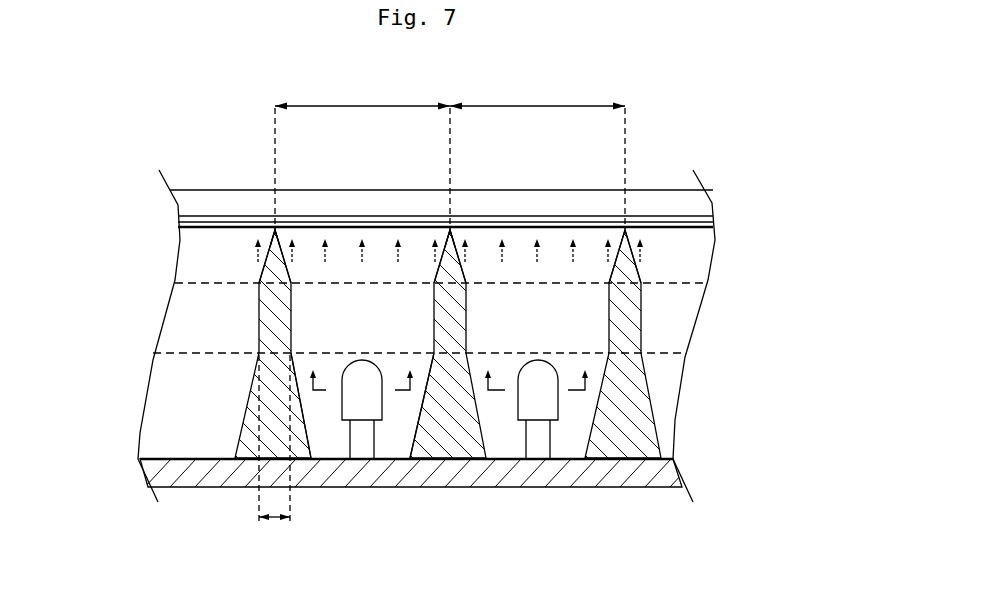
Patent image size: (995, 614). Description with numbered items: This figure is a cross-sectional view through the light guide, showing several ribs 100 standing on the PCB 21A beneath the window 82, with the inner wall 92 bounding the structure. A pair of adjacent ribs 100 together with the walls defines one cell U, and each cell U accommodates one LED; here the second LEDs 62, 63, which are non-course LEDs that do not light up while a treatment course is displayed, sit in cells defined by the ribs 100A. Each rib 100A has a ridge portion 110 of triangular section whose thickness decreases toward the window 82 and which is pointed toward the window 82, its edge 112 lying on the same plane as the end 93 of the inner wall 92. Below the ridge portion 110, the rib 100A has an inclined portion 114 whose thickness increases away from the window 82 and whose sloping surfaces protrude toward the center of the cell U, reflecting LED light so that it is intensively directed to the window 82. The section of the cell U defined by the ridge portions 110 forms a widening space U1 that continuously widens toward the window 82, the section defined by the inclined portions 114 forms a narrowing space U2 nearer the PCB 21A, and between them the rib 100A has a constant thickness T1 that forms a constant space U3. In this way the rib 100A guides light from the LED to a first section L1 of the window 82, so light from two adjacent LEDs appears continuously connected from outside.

The ridge portion 110 is at (273, 270).
The tip end of partition 112 is at (275, 228).
The inclined portion 114 is at (300, 398).
The window 82 is at (362, 196).
The end of the inner wall 93 is at (667, 227).
The rib 100 is at (430, 335).
The rib including ridge portion 100A is at (277, 310).
The inner wall 92 is at (192, 377).
The PCB 21A is at (478, 475).
The second LED 62 is at (547, 405).
The second LED 63 is at (355, 387).
The cell U is at (338, 323).
The widening space U1 is at (378, 245).
The narrowing space U2 is at (380, 323).
The constant space U3 is at (428, 397).
The first section of the window L1 is at (450, 156).
The constant thickness T1 is at (274, 449).